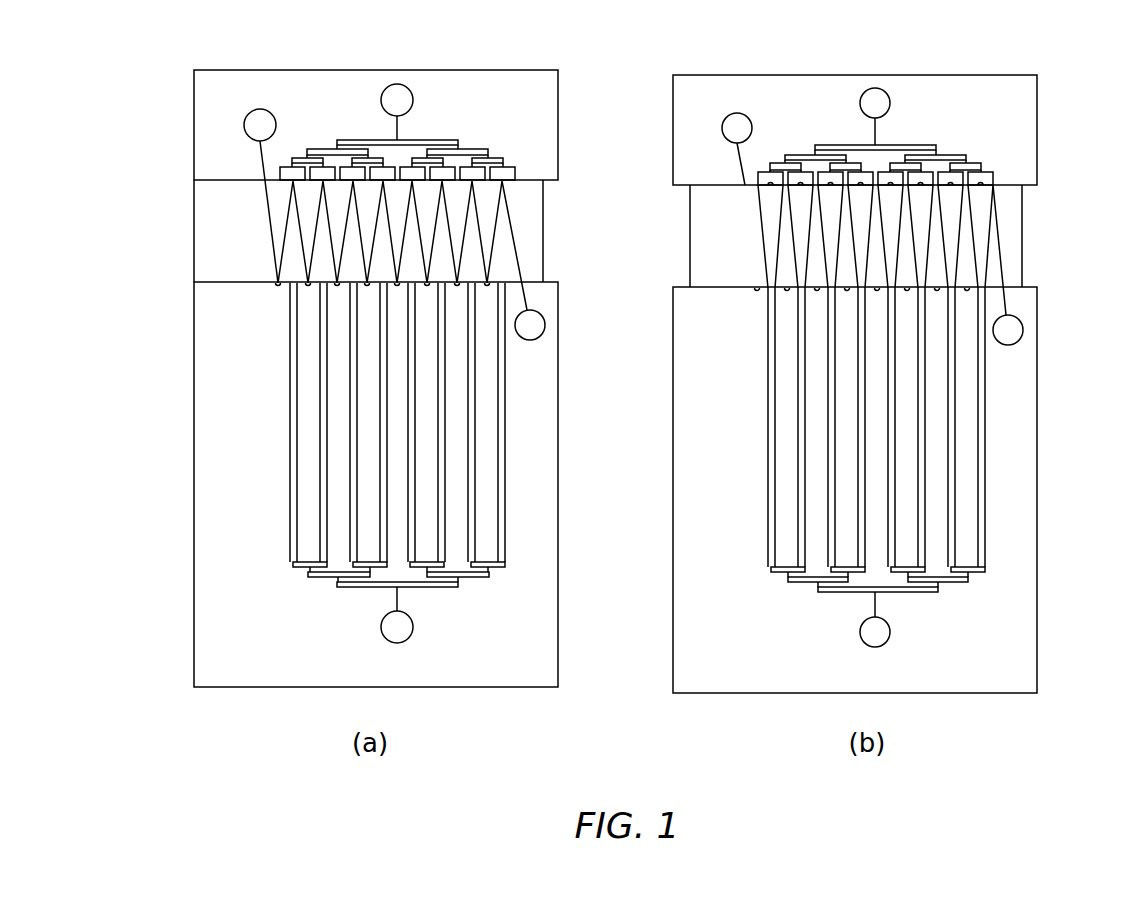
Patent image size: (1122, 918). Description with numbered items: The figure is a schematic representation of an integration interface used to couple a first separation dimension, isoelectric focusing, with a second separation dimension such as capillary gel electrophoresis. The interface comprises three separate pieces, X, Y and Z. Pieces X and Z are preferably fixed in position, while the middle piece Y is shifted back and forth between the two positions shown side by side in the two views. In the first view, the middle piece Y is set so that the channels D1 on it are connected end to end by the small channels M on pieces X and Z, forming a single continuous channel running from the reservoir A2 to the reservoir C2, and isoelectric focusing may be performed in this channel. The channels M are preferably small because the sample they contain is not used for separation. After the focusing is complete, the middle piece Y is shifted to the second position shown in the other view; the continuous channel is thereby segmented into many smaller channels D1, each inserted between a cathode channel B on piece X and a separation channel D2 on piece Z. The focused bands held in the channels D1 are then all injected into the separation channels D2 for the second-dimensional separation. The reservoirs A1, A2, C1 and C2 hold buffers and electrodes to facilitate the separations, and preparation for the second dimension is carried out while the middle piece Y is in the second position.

The piece X is at (285, 78).
The middle piece Y is at (205, 212).
The piece Z is at (272, 683).
The reservoir C1 is at (383, 95).
The reservoir C2 is at (250, 112).
The cathode channels B is at (495, 165).
The channels D1 is at (490, 242).
The separation channels D2 is at (295, 467).
The channels M is at (455, 285).
The reservoir A1 is at (393, 630).
The reservoir A2 is at (538, 327).